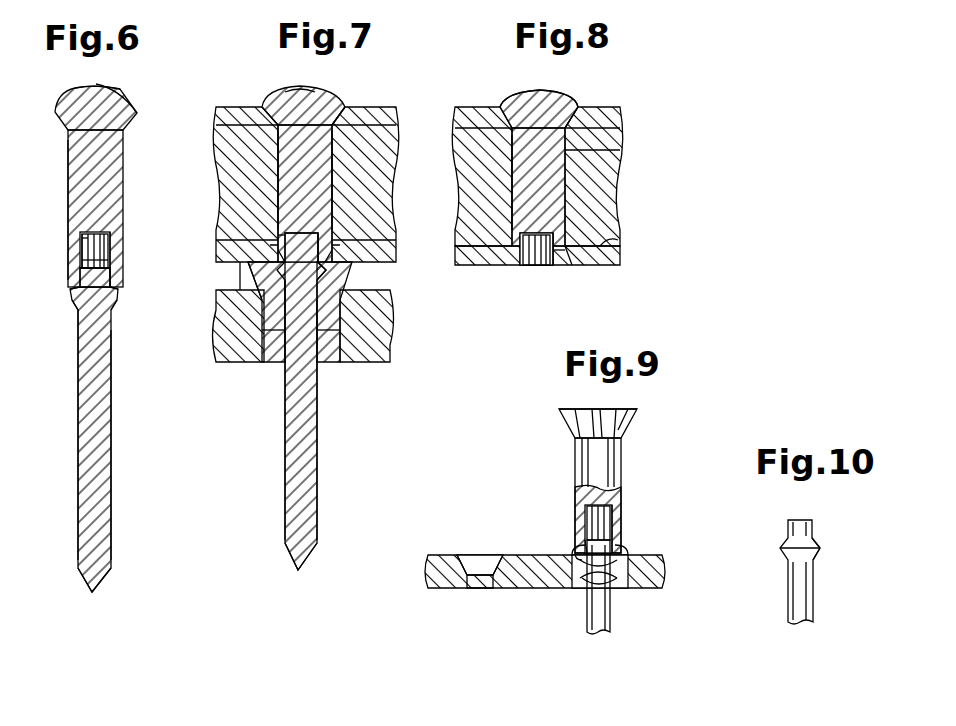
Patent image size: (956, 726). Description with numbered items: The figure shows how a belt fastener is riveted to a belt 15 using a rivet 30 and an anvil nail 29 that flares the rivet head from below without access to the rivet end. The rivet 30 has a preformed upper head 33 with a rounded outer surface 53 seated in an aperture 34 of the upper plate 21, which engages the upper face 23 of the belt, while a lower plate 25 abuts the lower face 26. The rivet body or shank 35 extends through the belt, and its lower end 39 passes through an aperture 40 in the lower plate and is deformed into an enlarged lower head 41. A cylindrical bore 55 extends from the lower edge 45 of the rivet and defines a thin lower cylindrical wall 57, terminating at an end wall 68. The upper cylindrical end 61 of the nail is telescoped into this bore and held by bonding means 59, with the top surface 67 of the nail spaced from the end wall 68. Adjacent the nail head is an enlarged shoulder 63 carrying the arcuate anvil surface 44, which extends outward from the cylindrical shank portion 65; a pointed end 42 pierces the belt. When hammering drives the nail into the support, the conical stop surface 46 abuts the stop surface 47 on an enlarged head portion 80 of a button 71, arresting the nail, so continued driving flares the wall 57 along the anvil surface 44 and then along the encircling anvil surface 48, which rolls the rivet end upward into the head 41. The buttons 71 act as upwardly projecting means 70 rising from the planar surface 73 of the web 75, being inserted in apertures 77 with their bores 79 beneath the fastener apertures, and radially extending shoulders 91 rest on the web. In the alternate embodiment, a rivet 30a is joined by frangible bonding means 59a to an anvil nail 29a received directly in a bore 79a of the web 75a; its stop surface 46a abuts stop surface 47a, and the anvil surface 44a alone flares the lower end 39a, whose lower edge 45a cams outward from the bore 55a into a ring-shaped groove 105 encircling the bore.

In FIG. 7, the belt 15 is at (372, 186).
In FIG. 8, the belt 15 is at (600, 189).
In FIG. 7, the upper plate 21 is at (394, 110).
In FIG. 8, the upper plate 21 is at (621, 121).
In FIG. 8, the upper face of the belt 23 is at (621, 151).
In FIG. 7, the lower plate 25 is at (232, 256).
In FIG. 8, the lower plate 25 is at (595, 259).
In FIG. 8, the lower face of the belt 26 is at (612, 239).
In FIG. 6, the anvil nail 29 is at (124, 461).
In FIG. 7, the anvil nail 29 is at (321, 479).
In FIG. 9, the anvil nail 29a is at (617, 626).
In FIG. 10, the anvil nail 29a is at (816, 593).
In FIG. 6, the rivet 30 is at (127, 157).
In FIG. 7, the rivet 30 is at (297, 108).
In FIG. 8, the rivet 30 is at (539, 177).
In FIG. 9, the rivet 30a is at (640, 439).
In FIG. 6, the upper head 33 is at (120, 100).
In FIG. 8, the upper head 33 is at (545, 99).
In FIG. 9, the upper head 33 is at (625, 411).
In FIG. 7, the aperture in the upper plate 34 is at (346, 108).
In FIG. 8, the aperture in the upper plate 34 is at (582, 109).
In FIG. 6, the rivet body or shank 35 is at (92, 150).
In FIG. 7, the rivet body or shank 35 is at (288, 152).
In FIG. 8, the rivet body or shank 35 is at (520, 161).
In FIG. 6, the lower end of the rivet 39 is at (126, 281).
In FIG. 8, the lower end of the rivet 39 is at (580, 243).
In FIG. 9, the lower end of the rivet 39a is at (627, 541).
In FIG. 7, the aperture in the bottom plate 40 is at (266, 252).
In FIG. 8, the aperture in the bottom plate 40 is at (585, 263).
In FIG. 7, the lower head 41 is at (278, 236).
In FIG. 8, the lower head 41 is at (570, 266).
In FIG. 6, the pointed end of the nail 42 is at (92, 592).
In FIG. 7, the pointed end of the nail 42 is at (298, 570).
In FIG. 6, the anvil surface 44 is at (72, 290).
In FIG. 10, the anvil surface 44a is at (816, 541).
In FIG. 6, the lower edge of the rivet 45 is at (114, 286).
In FIG. 9, the lower edge of the rivet 45a is at (569, 556).
In FIG. 6, the stop surface 46 is at (113, 311).
In FIG. 7, the stop surface 46 is at (290, 300).
In FIG. 9, the stop surface 46a is at (586, 582).
In FIG. 10, the stop surface 46a is at (820, 549).
In FIG. 7, the stop surface 47 is at (340, 281).
In FIG. 9, the stop surface 47a is at (470, 561).
In FIG. 7, the anvil surface 48 is at (270, 246).
In FIG. 6, the rounded outer surface 53 is at (108, 92).
In FIG. 7, the rounded outer surface 53 is at (318, 96).
In FIG. 8, the rounded outer surface 53 is at (522, 101).
In FIG. 6, the cylindrical bore 55 is at (104, 242).
In FIG. 8, the cylindrical bore 55 is at (537, 264).
In FIG. 9, the cylindrical bore 55a is at (606, 516).
In FIG. 6, the lower cylindrical wall 57 is at (80, 259).
In FIG. 7, the lower cylindrical wall 57 is at (331, 242).
In FIG. 6, the bonding means 59 is at (82, 270).
In FIG. 9, the frangible bonding means 59a is at (576, 541).
In FIG. 6, the upper cylindrical end of the nail 61 is at (95, 312).
In FIG. 6, the enlarged shoulder 63 is at (74, 300).
In FIG. 6, the cylindrical shank portion 65 is at (90, 436).
In FIG. 7, the cylindrical shank portion 65 is at (292, 459).
In FIG. 6, the top surface 67 is at (82, 241).
In FIG. 6, the end wall 68 is at (88, 238).
In FIG. 7, the upwardly projecting means 70 is at (242, 279).
In FIG. 7, the button 71 is at (357, 341).
In FIG. 7, the planar surface of the anvil means 73 is at (348, 292).
In FIG. 7, the web 75 is at (373, 321).
In FIG. 9, the web 75a is at (502, 591).
In FIG. 7, the aperture in the web 77 is at (330, 342).
In FIG. 7, the bore in the button 79 is at (284, 340).
In FIG. 9, the bore in the web 79a is at (468, 582).
In FIG. 7, the enlarged head portion 80 is at (266, 302).
In FIG. 7, the radially extending shoulder 91 is at (272, 281).
In FIG. 9, the ring-shaped groove 105 is at (447, 559).